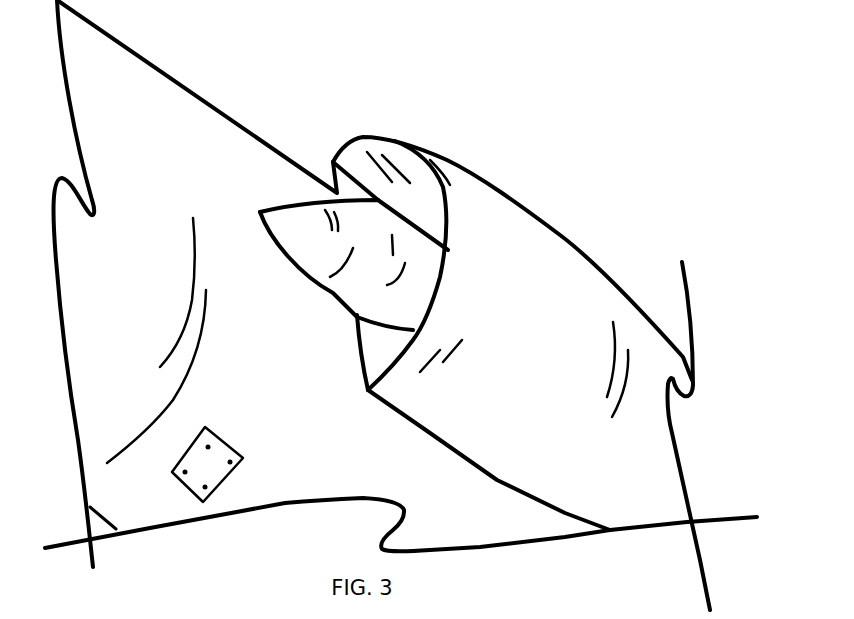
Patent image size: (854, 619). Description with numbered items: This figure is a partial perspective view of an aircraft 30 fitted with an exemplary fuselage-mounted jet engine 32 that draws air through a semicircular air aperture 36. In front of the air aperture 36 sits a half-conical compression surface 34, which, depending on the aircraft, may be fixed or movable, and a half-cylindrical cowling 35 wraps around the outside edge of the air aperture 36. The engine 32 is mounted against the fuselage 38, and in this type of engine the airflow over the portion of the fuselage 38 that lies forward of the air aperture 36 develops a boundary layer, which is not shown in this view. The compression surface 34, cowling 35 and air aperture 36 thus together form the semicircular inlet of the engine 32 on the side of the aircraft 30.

The aircraft 30 is at (453, 36).
The fuselage-mounted jet engine 32 is at (607, 216).
The half-conical compression surface 34 is at (321, 200).
The half-cylindrical cowling 35 is at (550, 260).
The semicircular air aperture 36 is at (377, 178).
The fuselage 38 is at (193, 195).